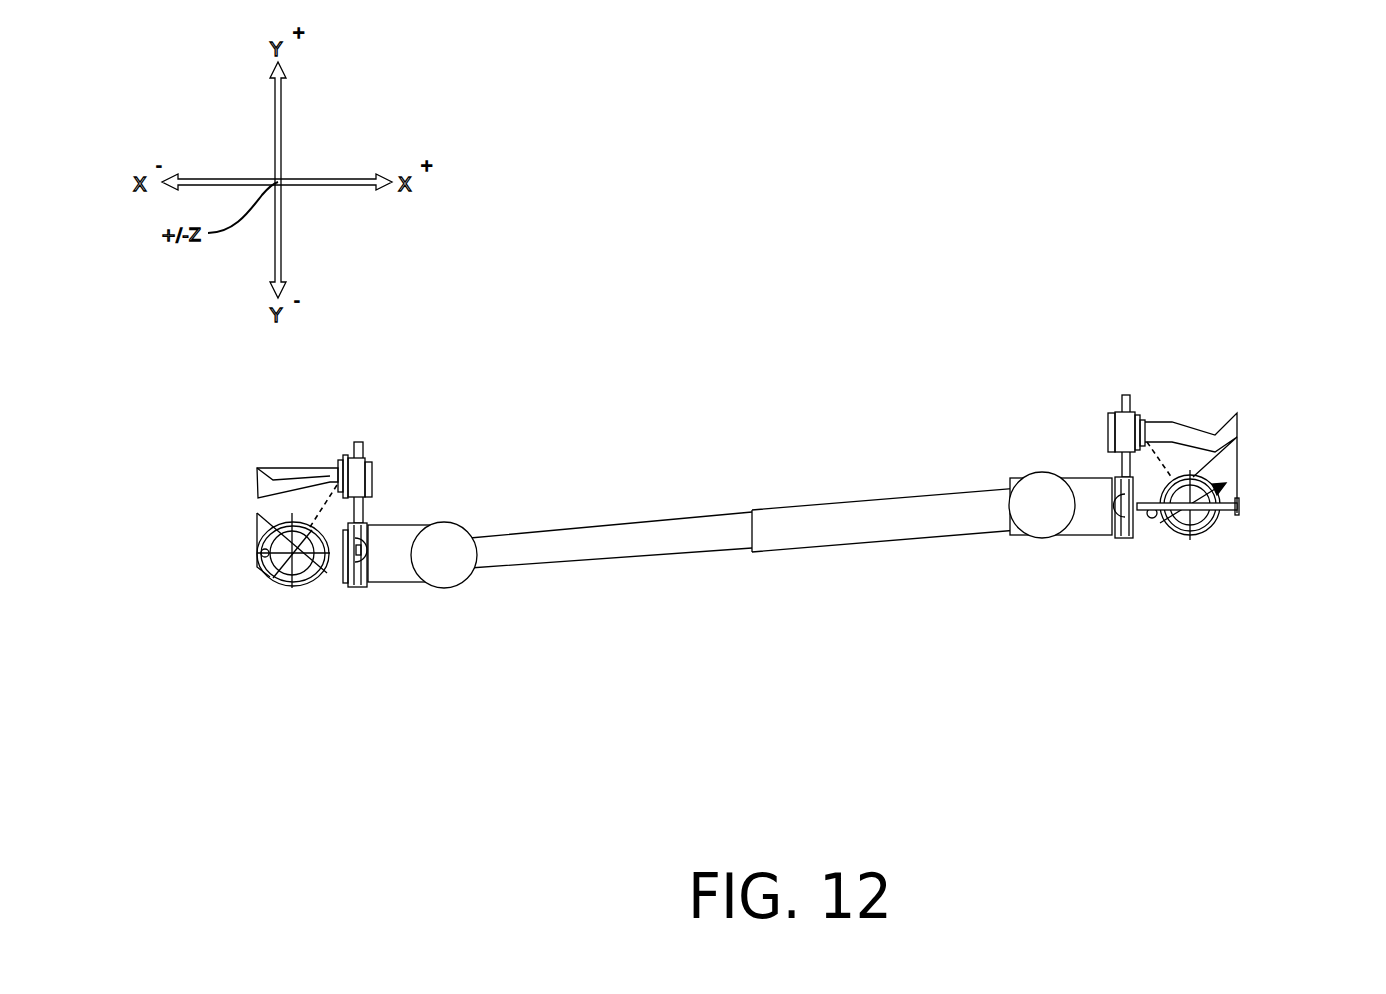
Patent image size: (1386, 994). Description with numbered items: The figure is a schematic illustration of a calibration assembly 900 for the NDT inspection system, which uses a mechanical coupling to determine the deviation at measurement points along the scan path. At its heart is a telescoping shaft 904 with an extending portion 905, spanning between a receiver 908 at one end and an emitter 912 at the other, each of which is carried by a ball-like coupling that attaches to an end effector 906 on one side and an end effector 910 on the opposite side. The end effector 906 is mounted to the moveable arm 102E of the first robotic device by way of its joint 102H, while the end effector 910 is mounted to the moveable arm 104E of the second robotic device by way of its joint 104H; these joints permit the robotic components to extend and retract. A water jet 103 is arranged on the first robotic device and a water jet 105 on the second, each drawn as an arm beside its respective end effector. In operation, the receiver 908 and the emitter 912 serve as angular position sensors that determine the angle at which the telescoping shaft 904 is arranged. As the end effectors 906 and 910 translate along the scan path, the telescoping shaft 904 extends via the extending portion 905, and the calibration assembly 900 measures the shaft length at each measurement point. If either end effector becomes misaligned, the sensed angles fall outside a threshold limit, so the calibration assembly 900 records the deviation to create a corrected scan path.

The calibration assembly 900 is at (746, 366).
The water jet 103 is at (300, 468).
The water jet 105 is at (1145, 420).
The moveable arm 102E is at (263, 532).
The joint 102H is at (277, 573).
The moveable arm 104E is at (1223, 520).
The joint 104H is at (1237, 480).
The telescoping shaft 904 is at (865, 497).
The extending portion 905 is at (602, 528).
The end effector 906 is at (403, 522).
The receiver 908 is at (468, 573).
The end effector 910 is at (1087, 478).
The emitter 912 is at (1042, 538).